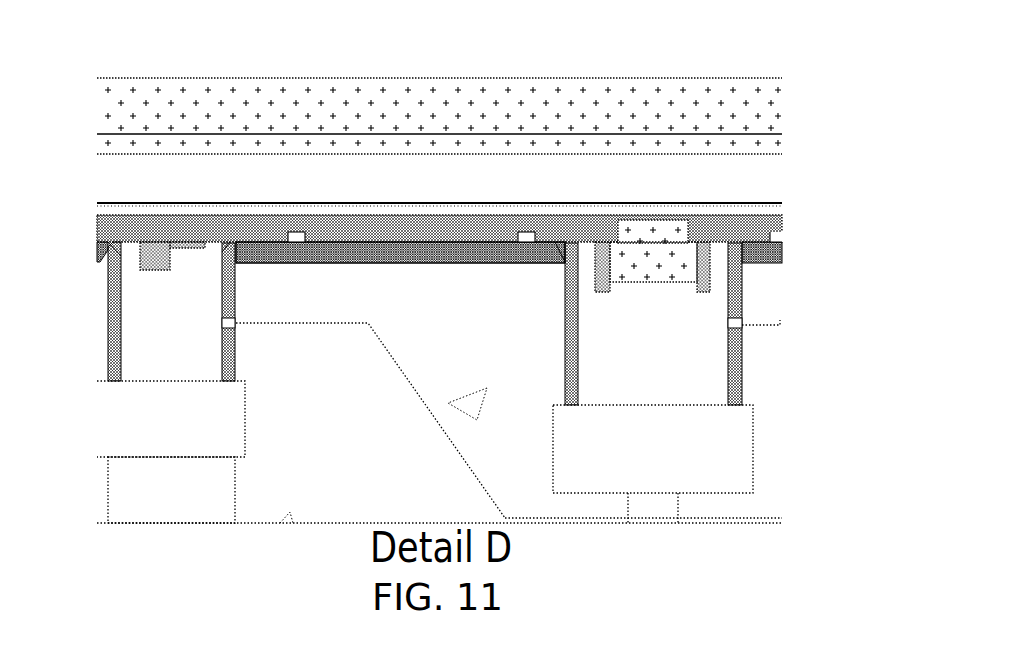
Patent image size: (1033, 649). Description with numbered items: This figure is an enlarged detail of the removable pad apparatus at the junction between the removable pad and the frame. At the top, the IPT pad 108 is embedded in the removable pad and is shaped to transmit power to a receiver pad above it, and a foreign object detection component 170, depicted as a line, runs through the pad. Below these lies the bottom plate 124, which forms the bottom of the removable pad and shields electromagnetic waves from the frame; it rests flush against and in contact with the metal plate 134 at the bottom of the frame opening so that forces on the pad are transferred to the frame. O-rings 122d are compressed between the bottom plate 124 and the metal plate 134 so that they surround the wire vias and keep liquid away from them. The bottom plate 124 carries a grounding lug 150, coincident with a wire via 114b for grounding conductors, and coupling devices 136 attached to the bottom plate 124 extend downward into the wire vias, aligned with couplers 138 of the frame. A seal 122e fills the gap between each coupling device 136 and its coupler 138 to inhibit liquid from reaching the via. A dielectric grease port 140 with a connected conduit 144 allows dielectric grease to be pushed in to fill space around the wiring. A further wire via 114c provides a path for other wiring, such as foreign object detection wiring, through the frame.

The foreign object detection component 170 is at (248, 133).
The IPT pad 108 is at (323, 155).
The bottom plate 124 is at (411, 231).
The metal plate 134 is at (367, 251).
The o-ring 122d is at (303, 244).
The seal 122e is at (103, 266).
The grounding lug 150 is at (170, 271).
The coupler 138 is at (240, 351).
The dielectric grease port 140 is at (238, 319).
The conduit 144 is at (328, 325).
The coupling device 136 is at (696, 291).
The wire via 114b is at (238, 466).
The wire via 114c is at (681, 508).